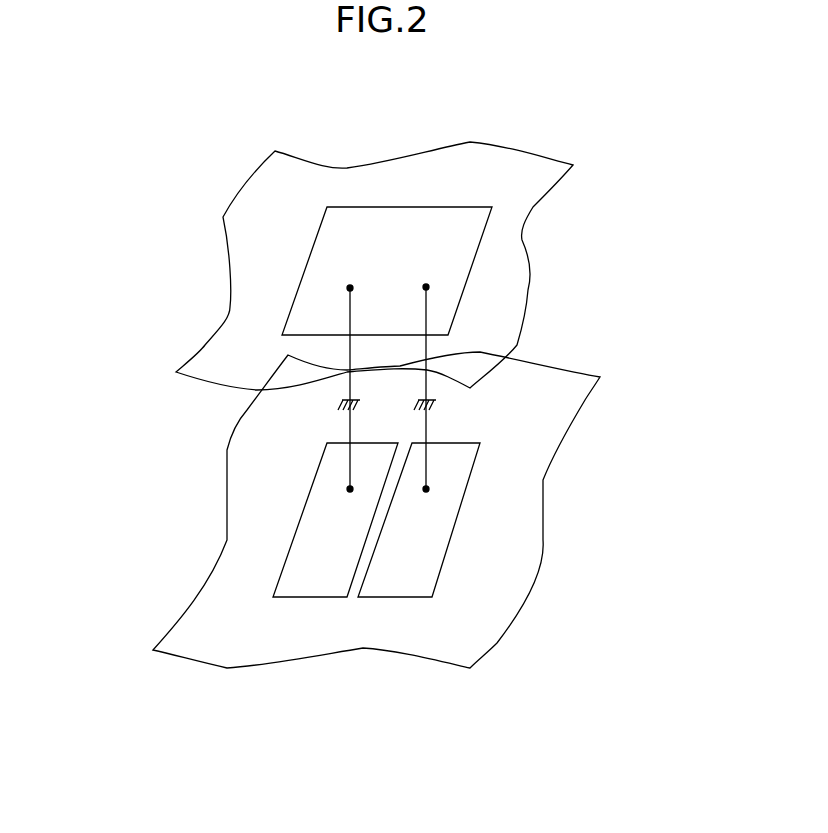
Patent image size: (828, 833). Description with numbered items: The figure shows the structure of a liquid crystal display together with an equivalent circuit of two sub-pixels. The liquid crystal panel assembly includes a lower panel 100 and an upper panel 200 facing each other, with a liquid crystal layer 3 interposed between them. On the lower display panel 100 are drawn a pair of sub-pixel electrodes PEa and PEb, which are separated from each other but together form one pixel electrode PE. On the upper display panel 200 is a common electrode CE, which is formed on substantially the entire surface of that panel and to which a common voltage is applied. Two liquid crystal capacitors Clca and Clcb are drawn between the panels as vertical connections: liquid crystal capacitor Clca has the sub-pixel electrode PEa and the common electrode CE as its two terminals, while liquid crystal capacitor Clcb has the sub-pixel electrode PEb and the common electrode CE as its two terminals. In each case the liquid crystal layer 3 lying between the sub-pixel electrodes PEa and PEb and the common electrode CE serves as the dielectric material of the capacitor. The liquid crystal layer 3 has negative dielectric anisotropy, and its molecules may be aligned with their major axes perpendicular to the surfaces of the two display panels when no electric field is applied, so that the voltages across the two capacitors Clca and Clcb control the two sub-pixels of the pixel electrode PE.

The liquid crystal layer 3 is at (188, 465).
The lower panel 100 is at (545, 497).
The upper panel 200 is at (532, 285).
The common electrode CE is at (522, 247).
The liquid crystal capacitor Clca is at (367, 388).
The liquid crystal capacitor Clcb is at (443, 388).
The pixel electrode PE is at (380, 738).
The sub-pixel electrode PEa is at (310, 597).
The sub-pixel electrode PEb is at (393, 597).